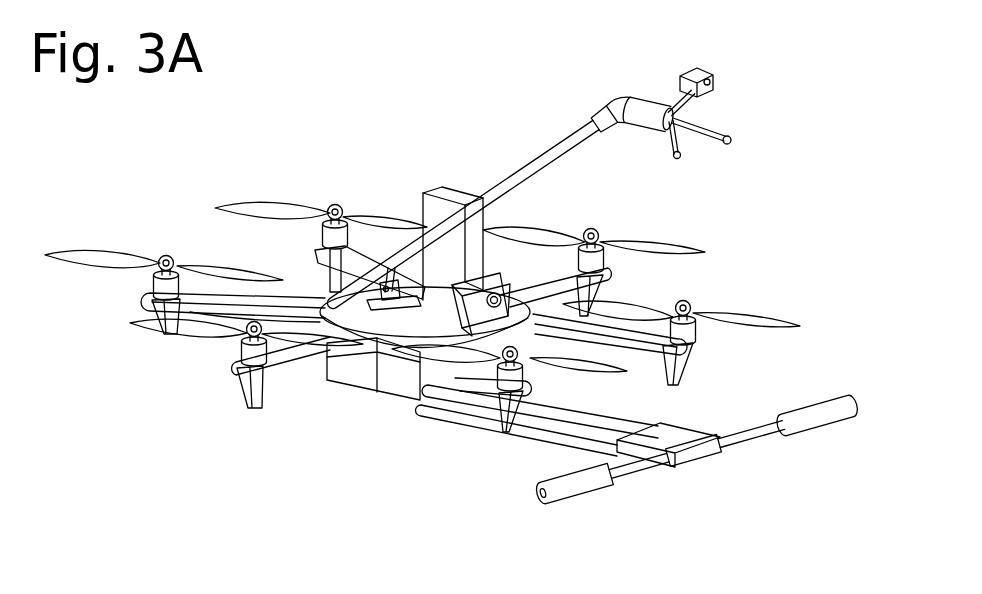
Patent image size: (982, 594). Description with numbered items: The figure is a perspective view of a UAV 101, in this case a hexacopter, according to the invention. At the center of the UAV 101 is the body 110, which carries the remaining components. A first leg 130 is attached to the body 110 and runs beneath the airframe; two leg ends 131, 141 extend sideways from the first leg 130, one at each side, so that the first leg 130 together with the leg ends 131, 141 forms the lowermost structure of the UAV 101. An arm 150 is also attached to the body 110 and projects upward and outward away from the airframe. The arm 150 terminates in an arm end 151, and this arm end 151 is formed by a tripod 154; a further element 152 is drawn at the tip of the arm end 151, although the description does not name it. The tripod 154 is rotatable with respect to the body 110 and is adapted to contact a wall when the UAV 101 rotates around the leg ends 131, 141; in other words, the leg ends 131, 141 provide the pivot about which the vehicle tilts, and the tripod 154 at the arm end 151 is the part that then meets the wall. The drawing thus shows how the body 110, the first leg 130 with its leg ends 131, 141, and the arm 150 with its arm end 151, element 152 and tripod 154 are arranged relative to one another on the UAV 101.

The UAV 101 is at (365, 186).
The body 110 is at (408, 365).
The first leg 130 is at (546, 425).
The leg end 131 is at (578, 488).
The leg end 141 is at (812, 422).
The arm 150 is at (547, 162).
The arm end 151 is at (650, 84).
The camera 152 is at (702, 70).
The tripod 154 is at (718, 127).